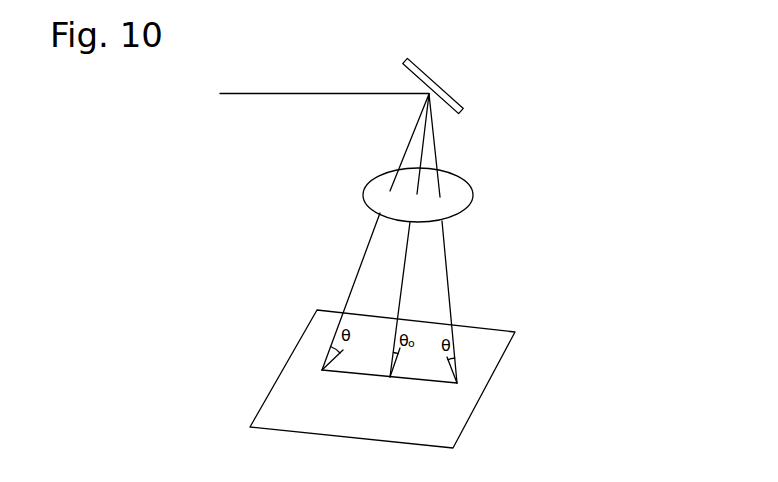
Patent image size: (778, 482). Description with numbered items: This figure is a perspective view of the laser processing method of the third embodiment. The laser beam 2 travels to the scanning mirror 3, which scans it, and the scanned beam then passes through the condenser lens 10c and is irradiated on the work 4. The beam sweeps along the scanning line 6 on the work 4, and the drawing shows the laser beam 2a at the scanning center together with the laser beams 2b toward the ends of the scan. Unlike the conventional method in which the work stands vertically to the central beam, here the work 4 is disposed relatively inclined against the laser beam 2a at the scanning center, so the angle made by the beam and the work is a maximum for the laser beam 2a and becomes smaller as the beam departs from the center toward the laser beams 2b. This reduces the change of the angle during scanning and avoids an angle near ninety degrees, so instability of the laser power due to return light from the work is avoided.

The laser beam 2 is at (246, 93).
The scanning mirror 3 is at (424, 73).
The condenser lens 10c is at (455, 190).
The laser beam 2b is at (445, 265).
The laser beam at the scanning center 2a is at (403, 296).
The work 4 is at (342, 422).
The scanning line 6 is at (438, 386).